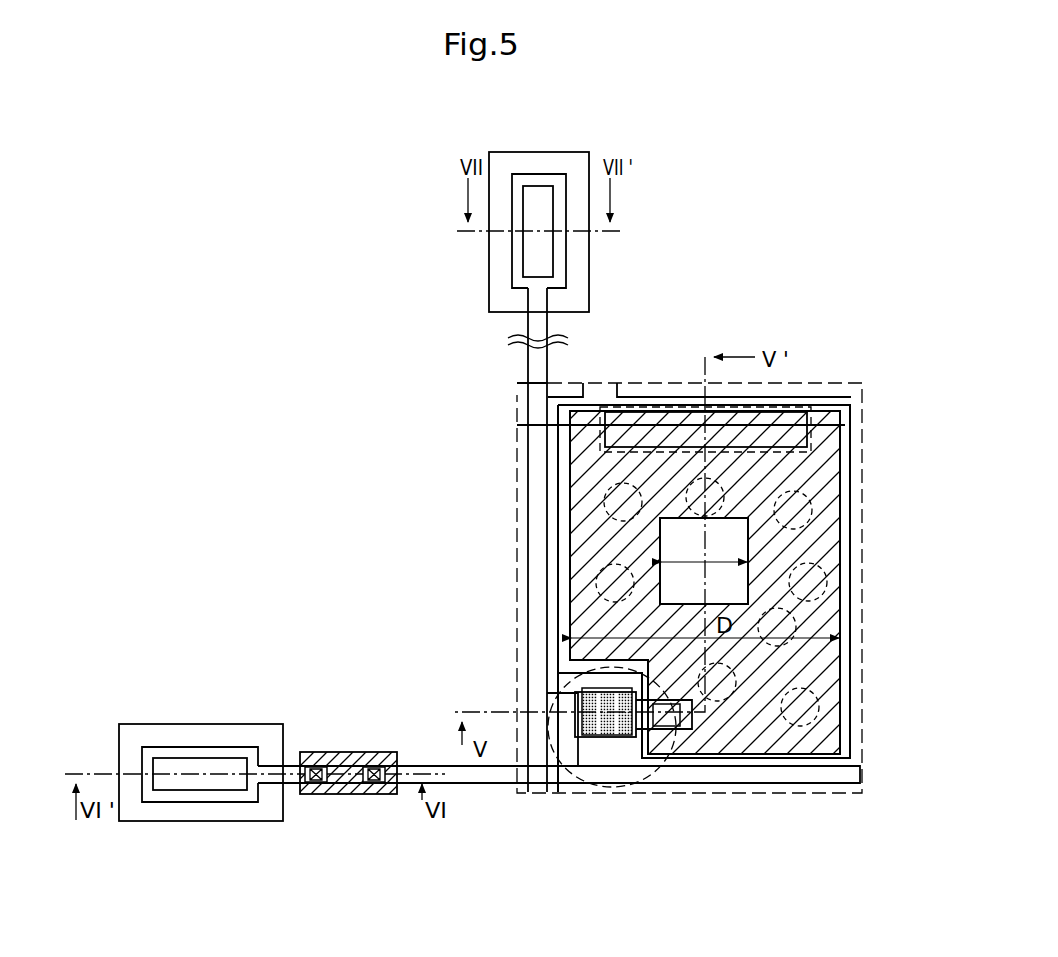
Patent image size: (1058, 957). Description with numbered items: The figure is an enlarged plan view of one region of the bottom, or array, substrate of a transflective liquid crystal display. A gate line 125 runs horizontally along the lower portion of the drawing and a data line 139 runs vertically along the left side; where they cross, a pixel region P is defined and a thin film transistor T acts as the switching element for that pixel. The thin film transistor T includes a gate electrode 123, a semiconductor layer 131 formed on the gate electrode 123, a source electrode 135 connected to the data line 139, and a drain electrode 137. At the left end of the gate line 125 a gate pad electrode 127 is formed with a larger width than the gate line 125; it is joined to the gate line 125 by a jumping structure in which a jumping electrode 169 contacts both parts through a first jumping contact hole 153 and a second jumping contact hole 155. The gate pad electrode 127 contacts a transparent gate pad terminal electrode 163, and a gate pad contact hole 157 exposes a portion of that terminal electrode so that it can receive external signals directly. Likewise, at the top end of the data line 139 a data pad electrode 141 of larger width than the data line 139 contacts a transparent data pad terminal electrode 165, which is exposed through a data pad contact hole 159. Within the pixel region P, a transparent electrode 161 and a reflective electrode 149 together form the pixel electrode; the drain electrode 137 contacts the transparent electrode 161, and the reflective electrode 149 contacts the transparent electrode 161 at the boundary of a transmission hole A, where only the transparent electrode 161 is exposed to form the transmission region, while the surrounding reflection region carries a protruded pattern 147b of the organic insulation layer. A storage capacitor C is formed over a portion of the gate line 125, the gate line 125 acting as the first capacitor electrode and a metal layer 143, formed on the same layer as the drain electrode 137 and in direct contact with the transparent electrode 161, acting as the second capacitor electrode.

The gate electrode 123 is at (577, 690).
The gate line 125 is at (800, 784).
The gate pad electrode 127 is at (237, 802).
The semiconductor layer 131 is at (600, 740).
The source electrode 135 is at (566, 745).
The drain electrode 137 is at (680, 728).
The data line 139 is at (528, 403).
The data pad electrode 141 is at (573, 278).
The metal layer (second capacitor electrode) 143 is at (816, 410).
The protruded pattern 147b is at (853, 527).
The reflective electrode 149 is at (570, 492).
The first jumping contact hole 153 is at (372, 794).
The second jumping contact hole 155 is at (316, 794).
The gate pad contact hole 157 is at (152, 765).
The data pad contact hole 159 is at (538, 186).
The transparent electrode 161 is at (558, 532).
The gate pad terminal electrode 163 is at (237, 724).
The data pad terminal electrode 165 is at (489, 278).
The jumping electrode 169 is at (347, 752).
The pixel region P is at (862, 492).
The thin film transistor T is at (625, 787).
The transmission hole A is at (748, 583).
The storage capacitor C is at (844, 426).